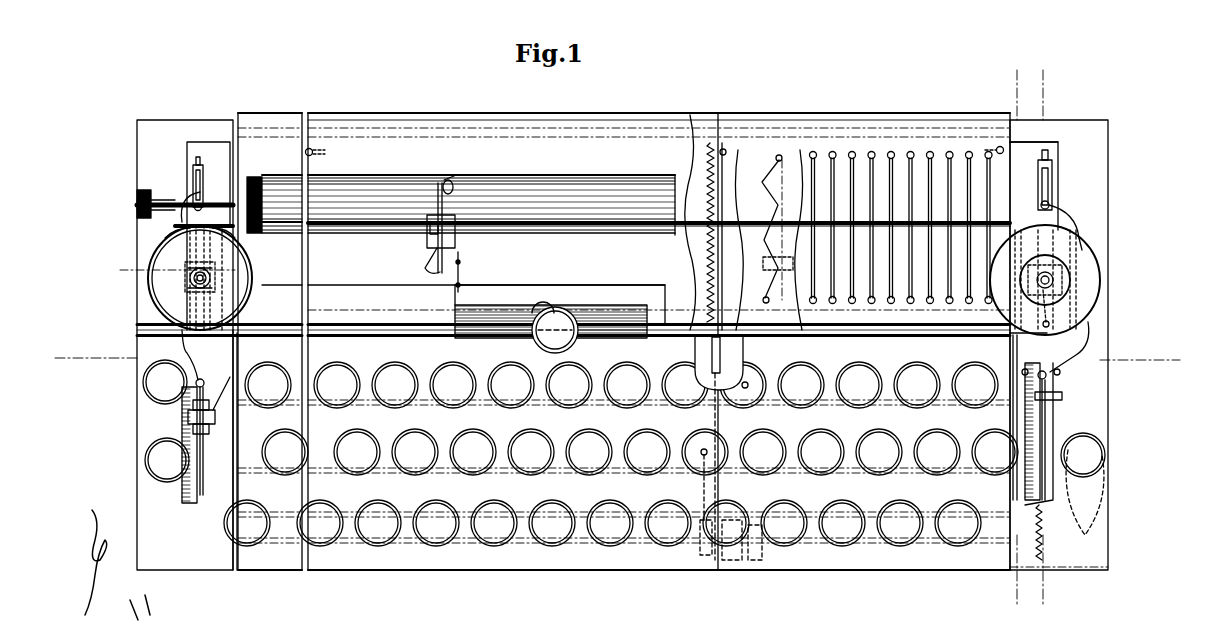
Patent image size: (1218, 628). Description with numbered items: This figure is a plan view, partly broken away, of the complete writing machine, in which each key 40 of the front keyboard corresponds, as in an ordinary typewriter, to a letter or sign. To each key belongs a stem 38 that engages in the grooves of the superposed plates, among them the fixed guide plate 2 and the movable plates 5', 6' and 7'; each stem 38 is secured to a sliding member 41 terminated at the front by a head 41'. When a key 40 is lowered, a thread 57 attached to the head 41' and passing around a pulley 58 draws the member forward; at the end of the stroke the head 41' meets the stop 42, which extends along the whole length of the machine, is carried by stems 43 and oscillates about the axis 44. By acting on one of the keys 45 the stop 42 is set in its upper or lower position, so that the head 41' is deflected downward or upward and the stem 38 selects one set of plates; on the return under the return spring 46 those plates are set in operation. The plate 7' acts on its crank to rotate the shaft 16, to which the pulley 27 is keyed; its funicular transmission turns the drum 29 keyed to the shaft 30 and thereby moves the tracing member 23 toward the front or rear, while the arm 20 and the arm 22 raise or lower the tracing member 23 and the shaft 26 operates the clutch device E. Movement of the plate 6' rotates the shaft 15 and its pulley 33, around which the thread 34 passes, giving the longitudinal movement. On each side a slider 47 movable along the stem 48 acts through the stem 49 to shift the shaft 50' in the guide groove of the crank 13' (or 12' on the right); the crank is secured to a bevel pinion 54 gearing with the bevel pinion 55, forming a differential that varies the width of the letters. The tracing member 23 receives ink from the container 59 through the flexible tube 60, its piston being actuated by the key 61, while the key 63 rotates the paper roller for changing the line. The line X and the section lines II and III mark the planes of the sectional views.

The guide plate 2 is at (881, 155).
The plate 5' is at (797, 229).
The plate 6' is at (922, 217).
The plate 7' is at (508, 201).
The crank 12' is at (1107, 160).
The crank 13' is at (138, 159).
The shaft 15 is at (1053, 284).
The shaft 16 is at (199, 290).
The arm 20 is at (460, 262).
The arm 22 is at (438, 233).
The tracing member 23 is at (449, 182).
The shaft 26 is at (178, 234).
The pulley 27 is at (158, 273).
The drum 29 is at (246, 242).
The shaft 30 is at (321, 238).
The pulley 33 is at (1101, 282).
The thread 34 is at (366, 238).
The stem 38 is at (724, 149).
The key 40 is at (735, 532).
The sliding member 41 is at (687, 230).
The head 41' is at (694, 363).
The stop 42 is at (459, 514).
The stem 43 is at (233, 350).
The axis 44 is at (286, 130).
The key 45 is at (160, 468).
The return spring 46 is at (706, 255).
The slider 47 is at (190, 418).
The stem 48 is at (204, 472).
The stem 49 is at (160, 346).
The shaft 50' is at (688, 194).
The bevel pinion 54 is at (190, 274).
The bevel pinion 55 is at (213, 290).
The thread 57 is at (713, 412).
The pulley 58 is at (712, 557).
The container 59 is at (606, 303).
The flexible tube 60 is at (538, 305).
The key 61 is at (558, 320).
The key 63 is at (152, 383).
The clutch device E is at (1058, 266).
The section line X is at (617, 355).
The section line II is at (1021, 343).
The section line III is at (1049, 343).